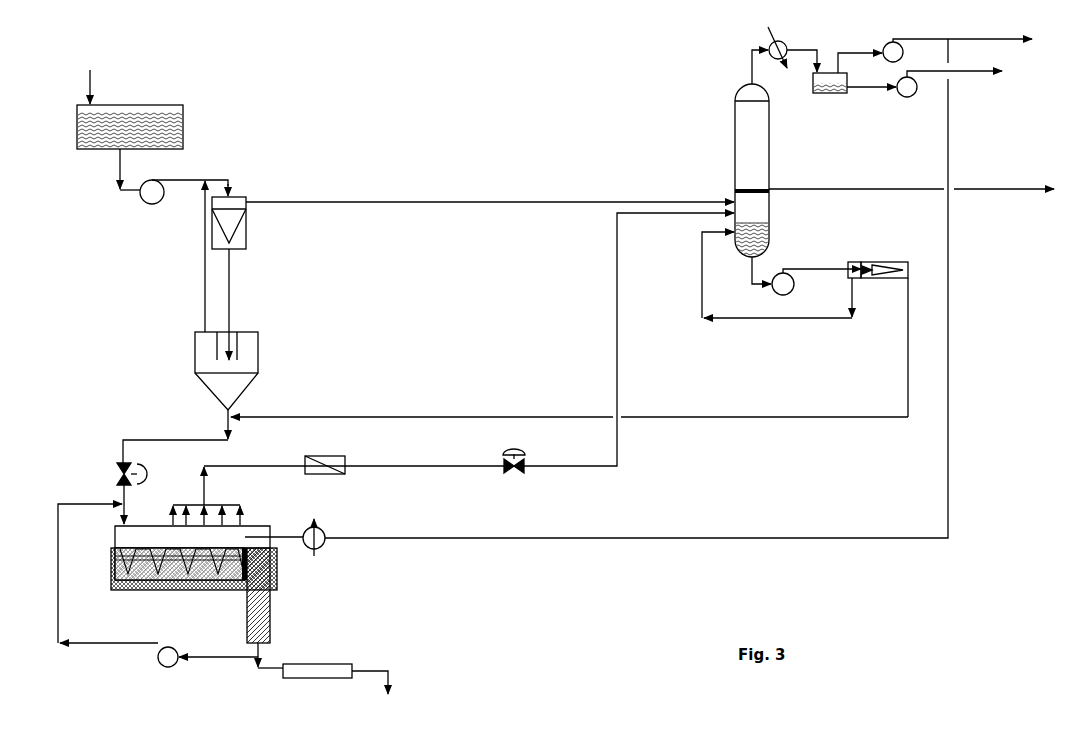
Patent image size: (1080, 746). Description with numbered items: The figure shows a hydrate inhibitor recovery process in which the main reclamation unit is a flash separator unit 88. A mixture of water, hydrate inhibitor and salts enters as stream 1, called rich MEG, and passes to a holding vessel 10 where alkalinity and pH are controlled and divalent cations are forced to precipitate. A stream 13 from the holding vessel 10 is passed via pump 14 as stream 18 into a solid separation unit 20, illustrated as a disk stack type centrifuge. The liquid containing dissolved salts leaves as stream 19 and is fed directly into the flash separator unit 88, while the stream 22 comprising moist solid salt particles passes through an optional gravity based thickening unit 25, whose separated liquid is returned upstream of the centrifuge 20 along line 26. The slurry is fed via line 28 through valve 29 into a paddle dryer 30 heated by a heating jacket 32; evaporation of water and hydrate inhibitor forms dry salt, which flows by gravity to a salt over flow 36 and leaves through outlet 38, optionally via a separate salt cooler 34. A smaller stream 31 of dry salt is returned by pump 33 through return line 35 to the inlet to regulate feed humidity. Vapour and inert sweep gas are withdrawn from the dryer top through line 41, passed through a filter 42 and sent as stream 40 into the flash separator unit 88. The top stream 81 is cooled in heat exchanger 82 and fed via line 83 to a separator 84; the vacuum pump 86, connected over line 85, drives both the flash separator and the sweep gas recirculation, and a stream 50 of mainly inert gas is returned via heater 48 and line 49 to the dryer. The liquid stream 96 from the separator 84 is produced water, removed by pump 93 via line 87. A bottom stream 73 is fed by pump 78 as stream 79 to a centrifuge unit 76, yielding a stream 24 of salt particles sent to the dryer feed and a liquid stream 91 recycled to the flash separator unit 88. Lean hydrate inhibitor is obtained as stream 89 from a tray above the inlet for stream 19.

The stream 1 is at (91, 78).
The holding vessel 10 is at (130, 127).
The stream 13 is at (119, 169).
The pump 14 is at (178, 197).
The stream 18 is at (222, 172).
The stream 19 is at (490, 193).
The solid separation unit 20 is at (221, 233).
The stream 22 is at (239, 304).
The stream 24 is at (569, 406).
The gravity based thickening unit 25 is at (187, 376).
The hopper vent line 26 is at (194, 256).
The line 28 is at (175, 436).
The valve 29 is at (122, 493).
The paddle dryer 30 is at (130, 537).
The stream 31 is at (218, 651).
The heating jacket 32 is at (113, 565).
The pump 33 is at (167, 647).
The salt cooler 34 is at (335, 670).
The return line 35 is at (99, 573).
The salt over flow 36 is at (257, 572).
The outlet 38 is at (264, 666).
The stream 40 is at (469, 343).
The line 41 is at (206, 496).
The filter 42 is at (325, 455).
The heater 48 is at (322, 534).
The line 49 is at (274, 527).
The stream 50 is at (636, 288).
The bottom stream 73 is at (751, 271).
The centrifuge unit 76 is at (878, 330).
The pump 78 is at (792, 290).
The stream 79 is at (822, 279).
The top stream 81 is at (750, 67).
The heat exchanger 82 is at (785, 46).
The line 83 is at (810, 53).
The separator 84 is at (819, 86).
The line 85 is at (860, 54).
The vacuum pump 86 is at (957, 50).
The line 87 is at (871, 99).
The flash separator unit 88 is at (737, 170).
The stream 89 is at (911, 179).
The liquid stream 91 is at (777, 285).
The pump 93 is at (917, 88).
The liquid stream 96 is at (965, 73).